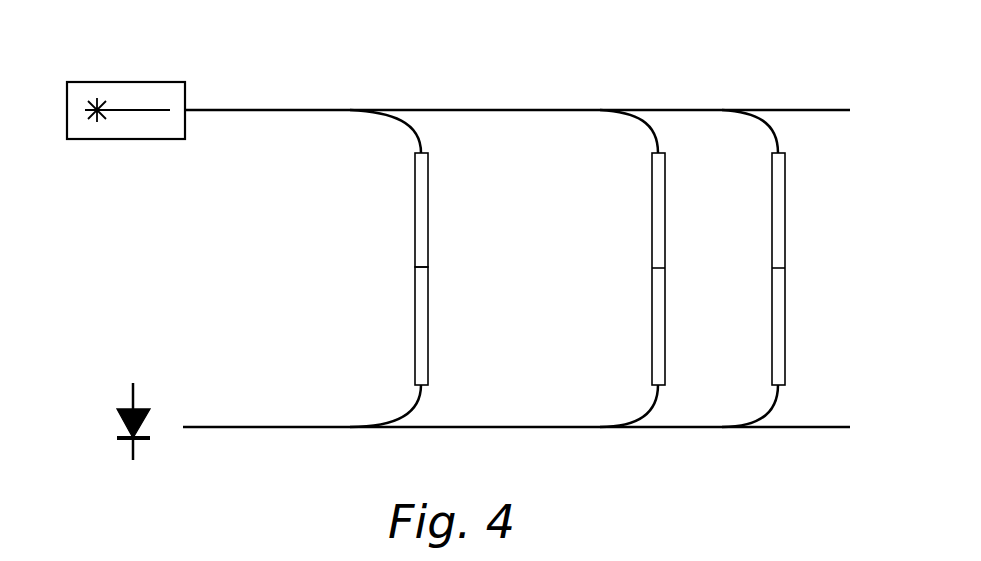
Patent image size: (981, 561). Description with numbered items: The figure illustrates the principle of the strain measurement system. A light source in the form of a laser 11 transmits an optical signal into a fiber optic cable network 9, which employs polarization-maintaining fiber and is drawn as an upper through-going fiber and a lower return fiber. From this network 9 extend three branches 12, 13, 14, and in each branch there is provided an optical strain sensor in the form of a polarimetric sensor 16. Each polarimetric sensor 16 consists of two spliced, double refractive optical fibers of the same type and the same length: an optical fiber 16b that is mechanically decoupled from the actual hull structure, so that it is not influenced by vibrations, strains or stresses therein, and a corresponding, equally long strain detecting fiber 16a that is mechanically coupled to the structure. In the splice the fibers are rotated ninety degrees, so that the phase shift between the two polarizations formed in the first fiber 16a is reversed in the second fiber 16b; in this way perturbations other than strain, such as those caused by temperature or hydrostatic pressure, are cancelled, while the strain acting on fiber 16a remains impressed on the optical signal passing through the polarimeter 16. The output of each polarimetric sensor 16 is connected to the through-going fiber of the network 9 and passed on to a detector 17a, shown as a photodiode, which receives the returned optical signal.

The fiber optic cable network 9 is at (276, 112).
The laser 11 is at (122, 82).
The branch 12 is at (425, 142).
The branch 13 is at (660, 135).
The branch 14 is at (780, 135).
The polarimetric sensor 16 is at (620, 295).
The strain detecting fiber 16a is at (418, 333).
The optical fiber 16b is at (418, 205).
The detector 17a is at (117, 423).